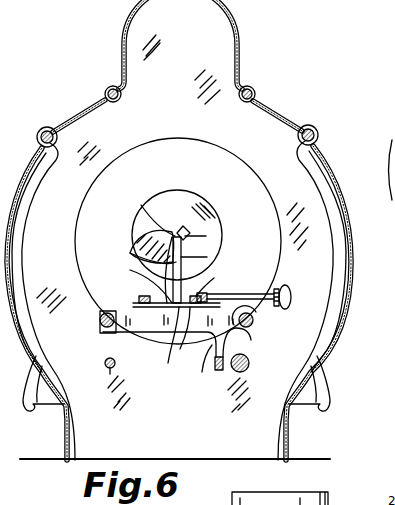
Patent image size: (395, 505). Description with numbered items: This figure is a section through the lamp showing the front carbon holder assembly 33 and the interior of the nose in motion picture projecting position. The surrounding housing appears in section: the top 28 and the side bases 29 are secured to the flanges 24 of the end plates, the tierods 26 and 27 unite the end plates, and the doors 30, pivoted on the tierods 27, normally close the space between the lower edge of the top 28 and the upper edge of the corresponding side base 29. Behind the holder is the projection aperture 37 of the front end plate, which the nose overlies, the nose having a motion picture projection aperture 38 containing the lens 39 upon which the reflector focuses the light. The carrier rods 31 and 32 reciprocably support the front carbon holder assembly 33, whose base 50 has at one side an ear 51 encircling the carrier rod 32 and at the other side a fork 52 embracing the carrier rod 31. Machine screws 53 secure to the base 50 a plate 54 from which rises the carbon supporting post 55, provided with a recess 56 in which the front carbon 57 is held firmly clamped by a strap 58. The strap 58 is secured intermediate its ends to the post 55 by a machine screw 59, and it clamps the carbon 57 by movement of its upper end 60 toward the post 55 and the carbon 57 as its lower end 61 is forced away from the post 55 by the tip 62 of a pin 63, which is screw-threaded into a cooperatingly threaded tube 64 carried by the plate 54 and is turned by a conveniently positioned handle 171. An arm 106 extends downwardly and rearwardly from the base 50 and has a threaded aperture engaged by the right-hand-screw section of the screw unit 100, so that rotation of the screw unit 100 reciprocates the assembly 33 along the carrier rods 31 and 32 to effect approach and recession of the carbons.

The flange 24 is at (28, 221).
The tierod 26 is at (110, 86).
The tierod 27 is at (47, 128).
The top 28 is at (240, 48).
The side base 29 is at (76, 440).
The door 30 is at (8, 244).
The carrier rod 31 is at (100, 318).
The carrier rod 32 is at (251, 337).
The front carbon holder assembly 33 is at (208, 342).
The projection aperture 37 is at (120, 158).
The motion picture projection aperture 38 is at (168, 197).
The lens 39 is at (205, 216).
The base 50 is at (154, 323).
The ear 51 is at (255, 322).
The fork 52 is at (105, 333).
The machine screw 53 is at (147, 296).
The plate 54 is at (184, 331).
The carbon supporting post 55 is at (207, 257).
The recess 56 is at (206, 236).
The front carbon 57 is at (180, 231).
The strap 58 is at (156, 235).
The machine screw 59 is at (133, 253).
The upper end of strap 60 is at (147, 214).
The lower end of strap 61 is at (141, 270).
The tip of pin 62 is at (167, 342).
The pin 63 is at (245, 294).
The screw-threaded tube 64 is at (213, 282).
The screw unit 100 is at (252, 373).
The arm 106 is at (217, 371).
The handle 171 is at (291, 297).